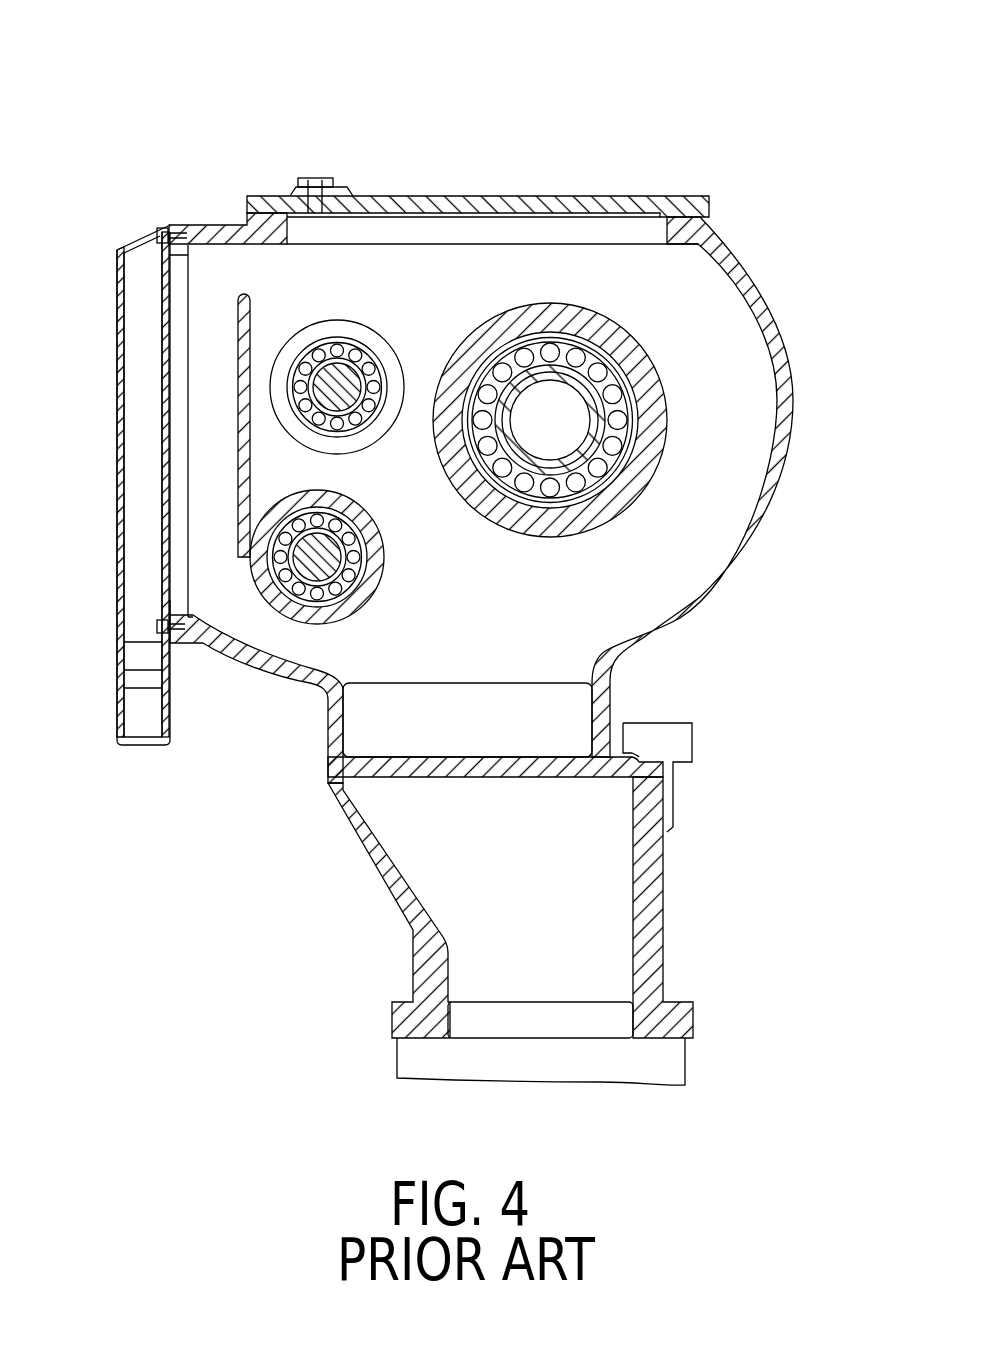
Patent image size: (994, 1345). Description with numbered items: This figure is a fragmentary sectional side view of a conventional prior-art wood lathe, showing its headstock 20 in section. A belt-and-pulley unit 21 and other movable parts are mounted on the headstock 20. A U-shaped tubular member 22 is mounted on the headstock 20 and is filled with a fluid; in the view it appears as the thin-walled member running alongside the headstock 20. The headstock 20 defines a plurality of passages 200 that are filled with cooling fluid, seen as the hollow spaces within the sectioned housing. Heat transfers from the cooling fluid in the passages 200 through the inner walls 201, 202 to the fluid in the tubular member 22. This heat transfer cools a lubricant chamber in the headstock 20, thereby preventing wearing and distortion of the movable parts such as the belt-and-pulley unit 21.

The headstock 20 is at (698, 166).
The passages 200 is at (750, 355).
The inner wall 201 is at (163, 310).
The inner wall 202 is at (192, 285).
The belt-and-pulley unit 21 is at (527, 305).
The U-shaped tubular member 22 is at (117, 693).